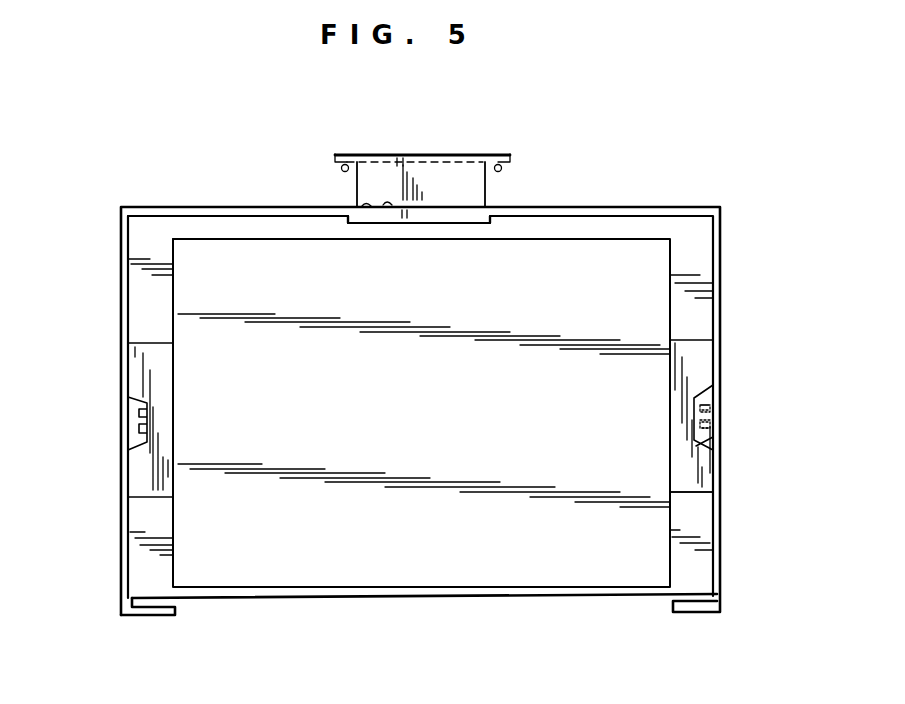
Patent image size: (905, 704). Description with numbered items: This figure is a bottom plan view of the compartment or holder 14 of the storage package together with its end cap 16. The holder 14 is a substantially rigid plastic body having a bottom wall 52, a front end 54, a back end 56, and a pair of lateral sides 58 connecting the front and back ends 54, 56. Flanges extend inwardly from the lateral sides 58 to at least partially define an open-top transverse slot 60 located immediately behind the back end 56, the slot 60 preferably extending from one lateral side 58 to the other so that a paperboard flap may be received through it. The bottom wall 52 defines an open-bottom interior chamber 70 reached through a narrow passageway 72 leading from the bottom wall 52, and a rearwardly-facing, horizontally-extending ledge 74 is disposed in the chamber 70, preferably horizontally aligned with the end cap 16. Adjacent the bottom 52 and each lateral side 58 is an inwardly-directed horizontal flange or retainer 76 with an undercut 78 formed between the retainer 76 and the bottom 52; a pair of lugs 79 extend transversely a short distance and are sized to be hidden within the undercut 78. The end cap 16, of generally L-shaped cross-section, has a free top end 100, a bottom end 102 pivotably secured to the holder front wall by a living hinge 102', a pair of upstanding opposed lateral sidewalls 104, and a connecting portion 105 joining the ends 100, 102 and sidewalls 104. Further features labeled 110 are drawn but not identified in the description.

The compartment or holder 14 is at (112, 274).
The end cap 16 is at (378, 153).
The bottom wall 52 is at (357, 376).
The front end 54 is at (598, 206).
The back end 56 is at (313, 600).
The lateral sides 58 is at (124, 483).
The transverse slot 60 is at (172, 604).
The interior chamber 70 is at (222, 233).
The narrow passageway 72 is at (272, 227).
The ledge 74 is at (497, 227).
The retainer 76 is at (129, 421).
The undercut 78 is at (718, 492).
The lugs 79 is at (708, 426).
The top end 100 is at (428, 155).
The bottom end 102 is at (337, 247).
The living hinge 102' is at (432, 258).
The lateral sidewalls 104 is at (357, 192).
The connecting portion 105 is at (448, 194).
The retaining hook 110 is at (342, 176).